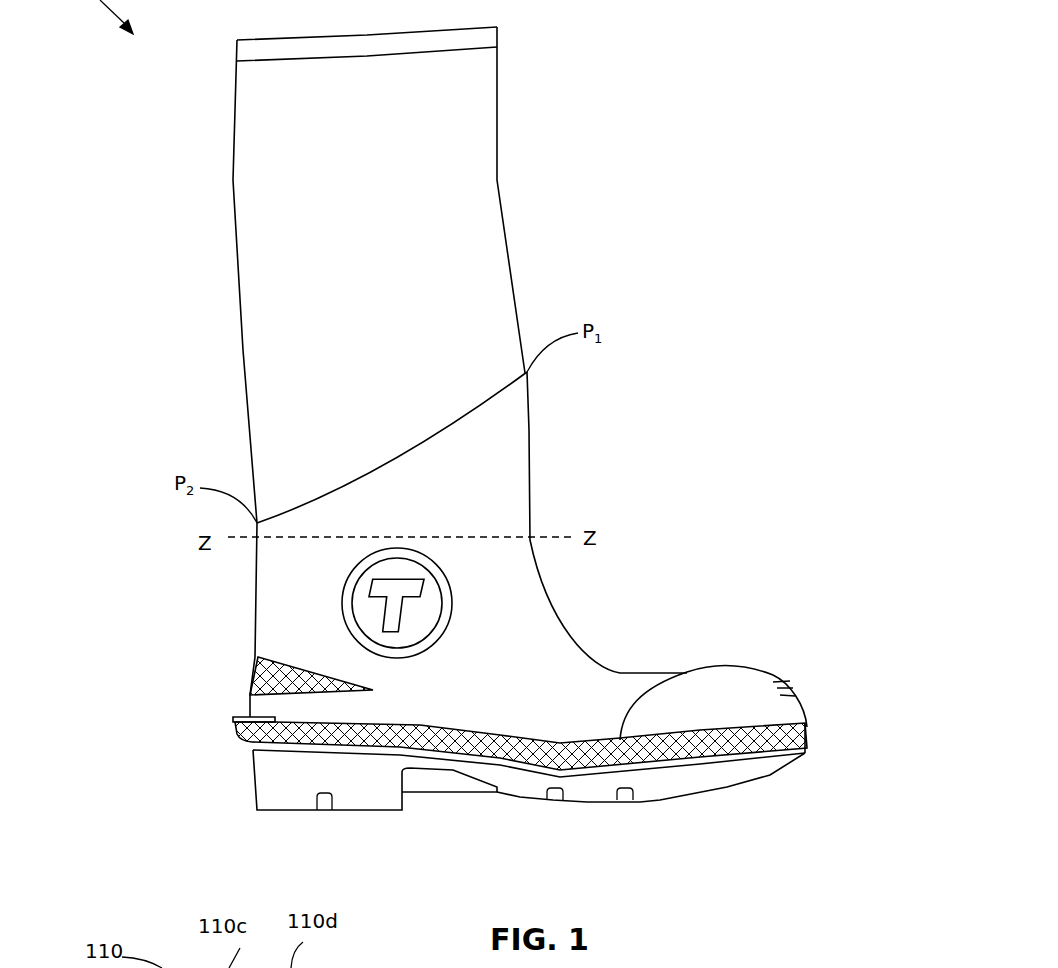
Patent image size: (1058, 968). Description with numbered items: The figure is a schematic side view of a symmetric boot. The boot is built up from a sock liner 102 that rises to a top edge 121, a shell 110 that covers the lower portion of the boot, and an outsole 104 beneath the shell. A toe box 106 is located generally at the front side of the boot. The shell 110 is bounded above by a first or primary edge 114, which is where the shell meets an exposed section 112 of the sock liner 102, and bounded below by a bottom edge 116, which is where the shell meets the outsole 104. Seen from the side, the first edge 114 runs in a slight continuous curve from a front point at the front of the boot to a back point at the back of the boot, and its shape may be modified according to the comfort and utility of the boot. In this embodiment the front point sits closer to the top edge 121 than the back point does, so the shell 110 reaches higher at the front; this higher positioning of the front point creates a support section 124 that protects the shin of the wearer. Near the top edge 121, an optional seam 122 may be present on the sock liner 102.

The sock liner 102 is at (398, 263).
The outsole 104 is at (592, 792).
The toe box 106 is at (757, 680).
The shell 110 is at (494, 671).
The exposed section 112 is at (233, 262).
The first edge 114 is at (452, 428).
The bottom edge 116 is at (808, 730).
The top edge 121 is at (258, 40).
The seam 122 is at (468, 48).
The support section 124 is at (513, 388).